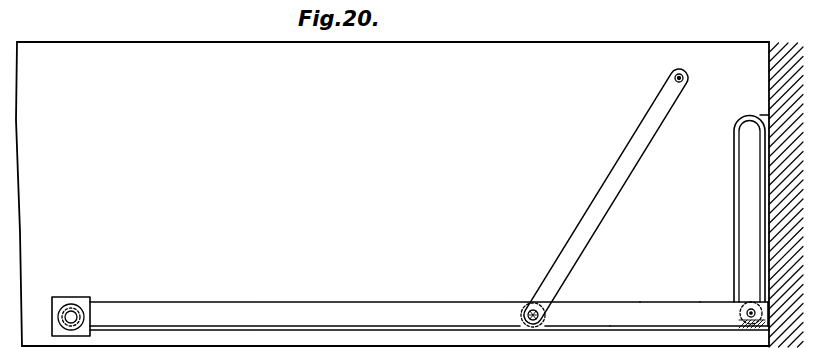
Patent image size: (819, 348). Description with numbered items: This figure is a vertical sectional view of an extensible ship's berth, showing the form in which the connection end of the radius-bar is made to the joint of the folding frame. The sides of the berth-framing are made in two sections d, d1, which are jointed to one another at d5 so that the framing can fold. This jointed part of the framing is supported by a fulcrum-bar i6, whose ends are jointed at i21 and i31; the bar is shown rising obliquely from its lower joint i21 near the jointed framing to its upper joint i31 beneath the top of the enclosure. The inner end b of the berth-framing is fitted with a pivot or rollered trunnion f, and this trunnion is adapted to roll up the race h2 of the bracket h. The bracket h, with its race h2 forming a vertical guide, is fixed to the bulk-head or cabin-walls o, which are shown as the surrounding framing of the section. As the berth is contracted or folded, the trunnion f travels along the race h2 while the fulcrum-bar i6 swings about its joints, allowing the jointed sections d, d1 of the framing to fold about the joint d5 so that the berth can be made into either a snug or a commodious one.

The bulk-head or cabin-walls o is at (409, 194).
The berth-framing side section d is at (275, 299).
The berth-framing side section d1 is at (685, 300).
The joint of the berth-framing sections d5 is at (577, 314).
The inner end b is at (689, 315).
The pivot or rollered trunnion f is at (740, 318).
The bracket h is at (736, 252).
The race h2 is at (749, 205).
The fulcrum-bar i6 is at (606, 180).
The joint of the fulcrum-bar i31 is at (683, 72).
The joint of the fulcrum-bar i21 is at (532, 307).